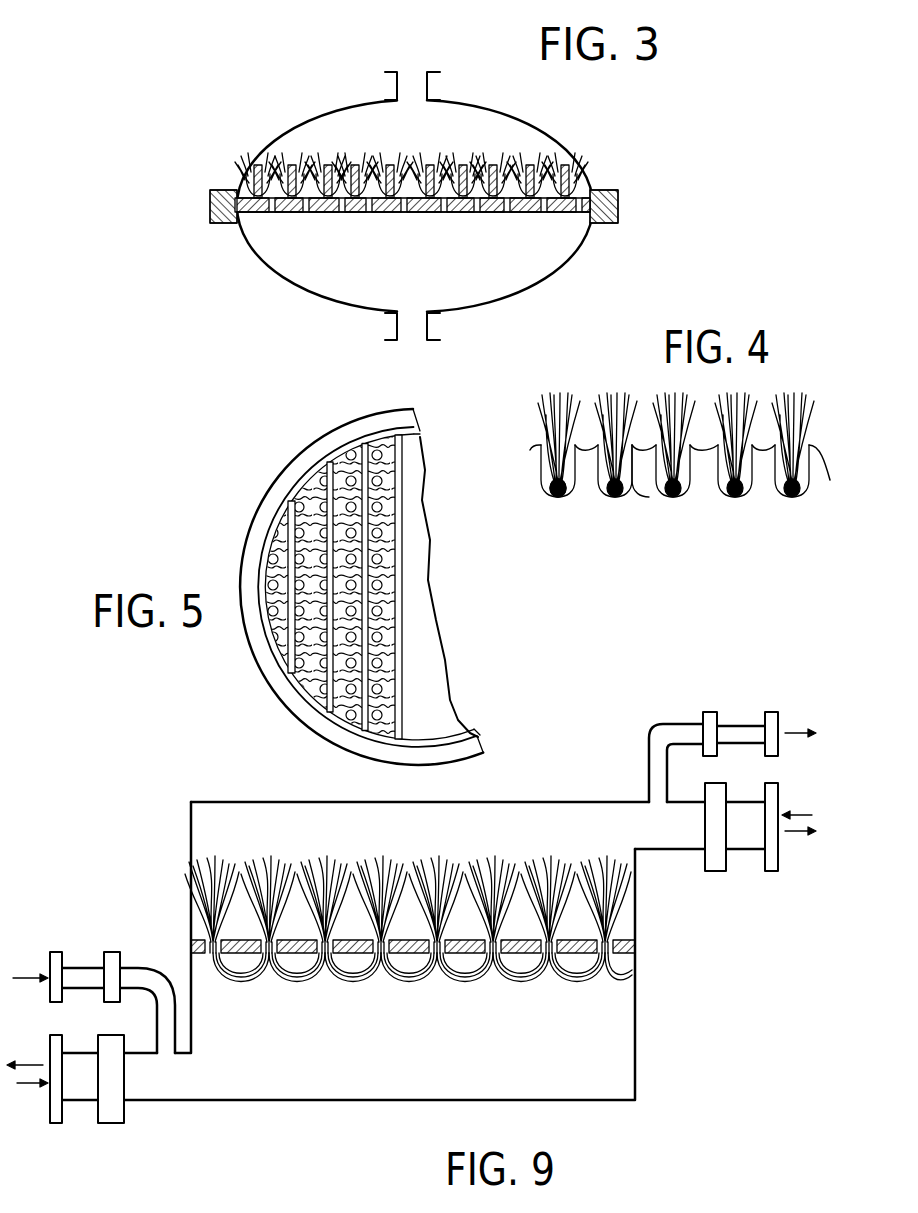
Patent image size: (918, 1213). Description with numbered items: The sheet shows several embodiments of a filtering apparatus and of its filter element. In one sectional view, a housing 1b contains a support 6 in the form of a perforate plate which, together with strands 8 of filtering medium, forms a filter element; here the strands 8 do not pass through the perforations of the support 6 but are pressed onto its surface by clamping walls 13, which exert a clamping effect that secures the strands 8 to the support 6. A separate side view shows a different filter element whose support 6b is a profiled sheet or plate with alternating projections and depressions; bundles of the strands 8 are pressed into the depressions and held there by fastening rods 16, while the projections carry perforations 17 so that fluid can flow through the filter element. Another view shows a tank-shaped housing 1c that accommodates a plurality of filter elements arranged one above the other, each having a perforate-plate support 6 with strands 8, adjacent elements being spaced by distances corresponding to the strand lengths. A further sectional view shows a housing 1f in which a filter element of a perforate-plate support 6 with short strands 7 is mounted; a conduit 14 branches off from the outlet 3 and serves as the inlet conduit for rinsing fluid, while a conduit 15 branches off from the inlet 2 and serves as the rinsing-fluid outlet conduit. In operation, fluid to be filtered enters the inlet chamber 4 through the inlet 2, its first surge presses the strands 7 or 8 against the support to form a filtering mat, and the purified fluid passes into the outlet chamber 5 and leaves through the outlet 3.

In FIG. 3, the housing 1b is at (590, 178).
In FIG. 5, the housing 1c is at (266, 500).
In FIG. 9, the housing 1f is at (342, 1101).
In FIG. 3, the inlet 2 is at (418, 87).
In FIG. 9, the inlet 2 is at (733, 850).
In FIG. 3, the outlet 3 is at (405, 324).
In FIG. 9, the outlet 3 is at (88, 1103).
In FIG. 3, the inlet chamber 4 is at (343, 128).
In FIG. 9, the inlet chamber 4 is at (520, 817).
In FIG. 3, the outlet chamber 5 is at (278, 243).
In FIG. 9, the outlet chamber 5 is at (587, 1083).
In FIG. 3, the support 6 is at (530, 213).
In FIG. 5, the support 6 is at (300, 686).
In FIG. 9, the support 6 is at (612, 940).
In FIG. 4, the support 6b is at (830, 480).
In FIG. 9, the short strands 7 is at (212, 908).
In FIG. 3, the strands 8 is at (286, 168).
In FIG. 4, the strands 8 is at (548, 440).
In FIG. 5, the strands 8 is at (273, 637).
In FIG. 3, the clamping walls 13 is at (532, 160).
In FIG. 9, the conduit 14 is at (88, 967).
In FIG. 9, the conduit 15 is at (724, 722).
In FIG. 4, the fastening rods 16 is at (553, 497).
In FIG. 4, the perforations 17 is at (645, 452).